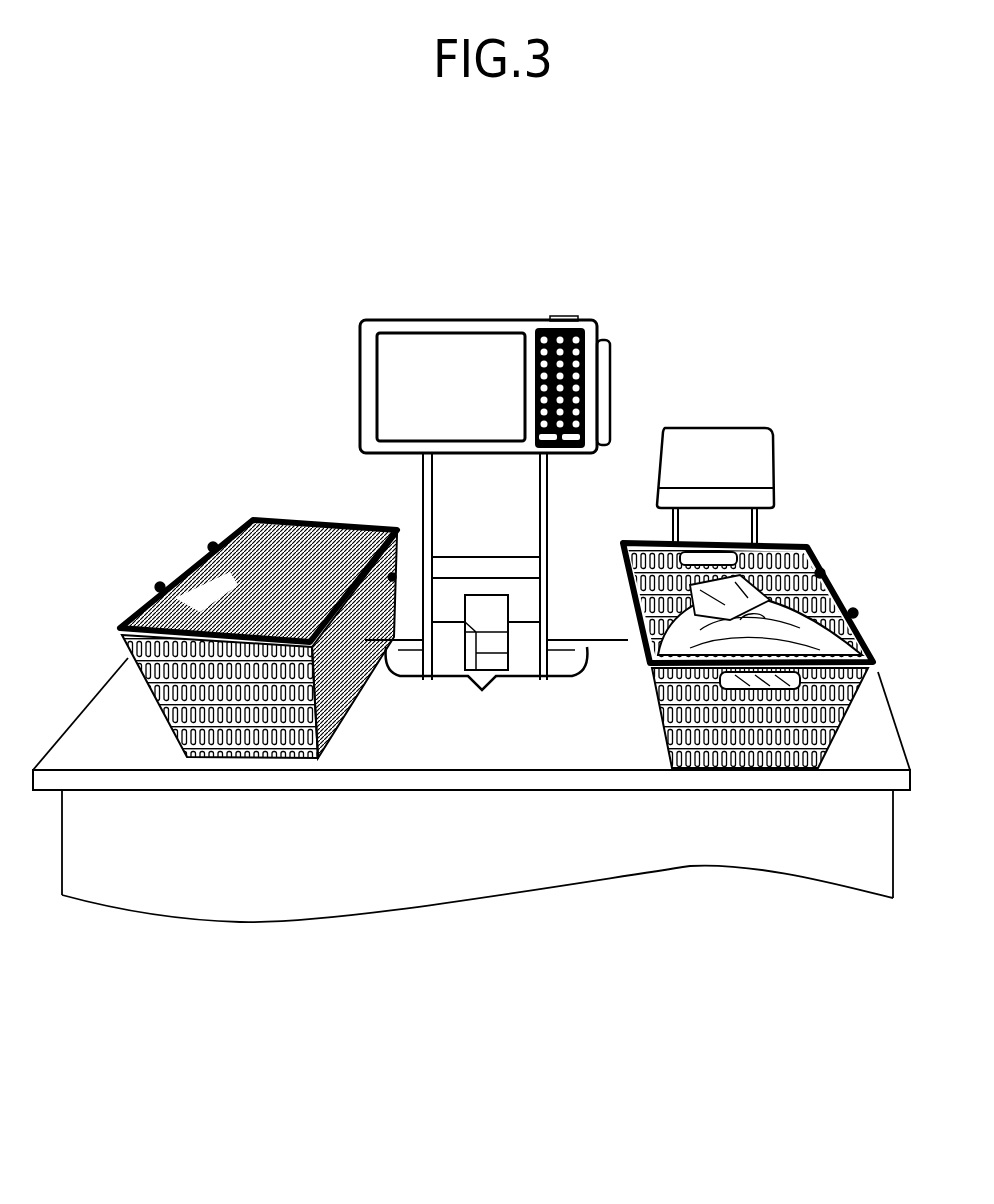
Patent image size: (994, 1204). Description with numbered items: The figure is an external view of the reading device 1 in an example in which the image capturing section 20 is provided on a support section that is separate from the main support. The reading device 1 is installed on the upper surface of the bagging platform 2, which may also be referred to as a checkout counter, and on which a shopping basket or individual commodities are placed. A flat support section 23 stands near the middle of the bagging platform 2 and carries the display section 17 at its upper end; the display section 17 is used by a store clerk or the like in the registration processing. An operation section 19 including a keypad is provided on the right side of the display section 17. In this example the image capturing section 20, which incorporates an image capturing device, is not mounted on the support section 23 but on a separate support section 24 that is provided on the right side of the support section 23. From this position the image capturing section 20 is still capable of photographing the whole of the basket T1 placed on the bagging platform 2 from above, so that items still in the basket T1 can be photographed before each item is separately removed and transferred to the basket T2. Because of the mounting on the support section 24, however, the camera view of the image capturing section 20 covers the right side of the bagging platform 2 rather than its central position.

The reading device 1 is at (485, 452).
The bagging platform 2 is at (866, 720).
The display section 17 is at (407, 344).
The operation section 19 is at (578, 317).
The image capturing section 20 is at (708, 426).
The support section 23 is at (548, 517).
The support section 24 is at (757, 523).
The basket T1 is at (697, 768).
The basket T2 is at (258, 760).